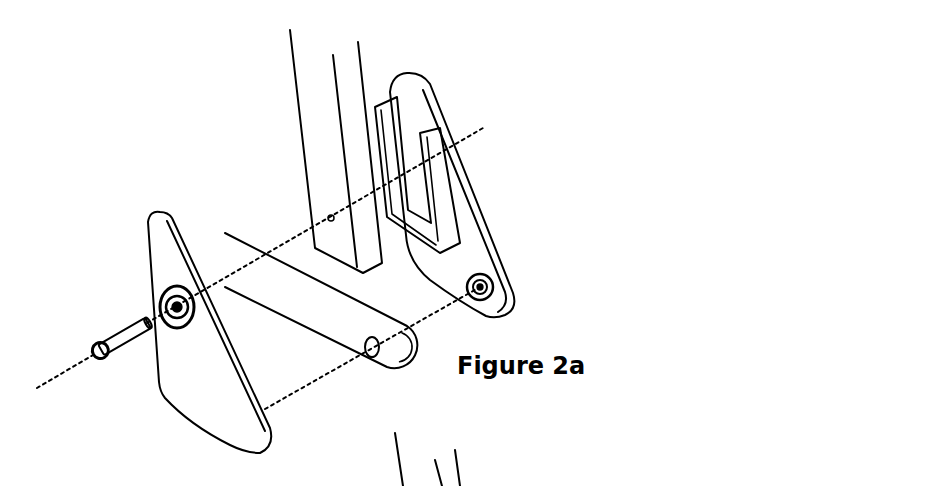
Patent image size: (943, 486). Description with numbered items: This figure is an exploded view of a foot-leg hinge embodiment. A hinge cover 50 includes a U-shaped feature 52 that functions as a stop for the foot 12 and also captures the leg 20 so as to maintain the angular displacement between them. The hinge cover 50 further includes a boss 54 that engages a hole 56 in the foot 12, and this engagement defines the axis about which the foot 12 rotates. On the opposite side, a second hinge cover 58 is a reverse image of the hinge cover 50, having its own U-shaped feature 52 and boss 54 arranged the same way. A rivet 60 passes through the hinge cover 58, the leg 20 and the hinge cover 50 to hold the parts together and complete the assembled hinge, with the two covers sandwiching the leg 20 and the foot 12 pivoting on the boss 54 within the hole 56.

The foot 12 is at (265, 235).
The leg 20 is at (312, 100).
The hinge cover 50 is at (423, 107).
The U-shaped feature 52 is at (445, 190).
The boss 54 is at (480, 280).
The hole 56 is at (375, 352).
The hinge cover 58 is at (210, 385).
The rivet 60 is at (127, 327).